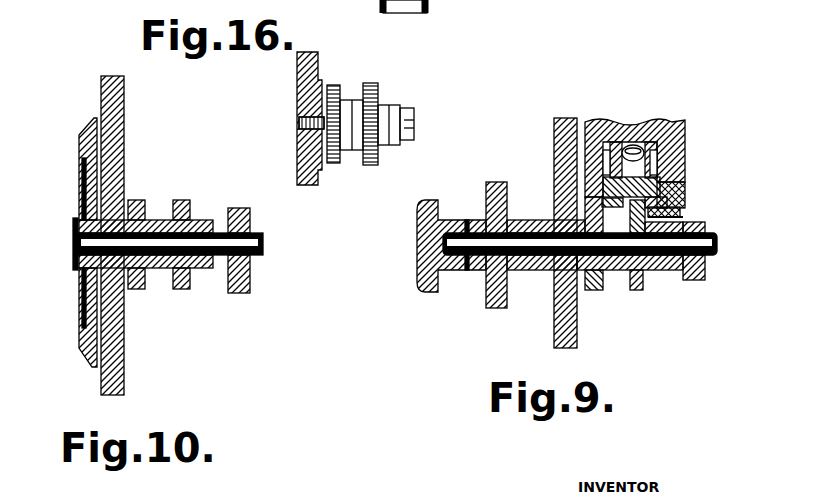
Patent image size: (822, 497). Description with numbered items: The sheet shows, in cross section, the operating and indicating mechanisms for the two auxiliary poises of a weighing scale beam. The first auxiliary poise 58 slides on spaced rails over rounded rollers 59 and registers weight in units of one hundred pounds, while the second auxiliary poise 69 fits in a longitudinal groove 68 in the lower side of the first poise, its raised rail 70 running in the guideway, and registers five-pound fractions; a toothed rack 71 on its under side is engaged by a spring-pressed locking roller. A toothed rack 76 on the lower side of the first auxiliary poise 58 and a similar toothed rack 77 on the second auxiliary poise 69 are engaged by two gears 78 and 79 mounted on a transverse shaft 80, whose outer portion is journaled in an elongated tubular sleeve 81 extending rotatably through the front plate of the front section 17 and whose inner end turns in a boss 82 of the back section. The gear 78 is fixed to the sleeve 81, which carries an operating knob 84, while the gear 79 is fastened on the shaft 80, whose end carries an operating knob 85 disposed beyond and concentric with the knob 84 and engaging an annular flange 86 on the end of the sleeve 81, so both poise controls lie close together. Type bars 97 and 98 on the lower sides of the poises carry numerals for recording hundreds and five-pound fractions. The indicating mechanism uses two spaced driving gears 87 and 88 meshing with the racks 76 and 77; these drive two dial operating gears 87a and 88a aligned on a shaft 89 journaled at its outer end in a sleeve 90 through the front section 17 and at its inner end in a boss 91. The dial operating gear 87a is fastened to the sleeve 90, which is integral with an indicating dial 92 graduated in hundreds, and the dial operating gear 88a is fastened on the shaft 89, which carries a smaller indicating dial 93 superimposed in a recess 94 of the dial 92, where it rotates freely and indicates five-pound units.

In FIG. 10, the front section 17 is at (101, 100).
In FIG. 16, the front section 17 is at (300, 100).
In FIG. 9, the front section 17 is at (553, 328).
In FIG. 10, the recess 94 is at (83, 182).
In FIG. 10, the indicating dial 93 is at (79, 278).
In FIG. 10, the indicating dial 92 is at (88, 318).
In FIG. 10, the dial operating gear 87a is at (135, 201).
In FIG. 10, the sleeve 90 is at (139, 290).
In FIG. 10, the dial operating gear 88a is at (181, 290).
In FIG. 10, the shaft 89 is at (219, 258).
In FIG. 10, the boss 91 is at (250, 268).
In FIG. 16, the driving gear 87 is at (334, 95).
In FIG. 16, the driving gear 88 is at (380, 88).
In FIG. 9, the first auxiliary poise 58 is at (640, 122).
In FIG. 9, the rollers 59 is at (628, 142).
In FIG. 9, the rail 70 is at (684, 130).
In FIG. 9, the second auxiliary poise 69 is at (684, 156).
In FIG. 9, the longitudinal groove 68 is at (685, 176).
In FIG. 9, the toothed rack 77 is at (684, 190).
In FIG. 9, the type bar 97 is at (683, 202).
In FIG. 9, the type bar 98 is at (683, 213).
In FIG. 9, the toothed rack 76 is at (600, 178).
In FIG. 9, the toothed rack 71 is at (600, 195).
In FIG. 9, the gear 78 is at (585, 212).
In FIG. 9, the operating knob 85 is at (420, 222).
In FIG. 9, the annular flange 86 is at (487, 272).
In FIG. 9, the operating knob 84 is at (487, 275).
In FIG. 9, the tubular sleeve 81 is at (553, 272).
In FIG. 9, the shaft 80 is at (681, 257).
In FIG. 9, the gear 79 is at (636, 291).
In FIG. 9, the boss 82 is at (707, 266).